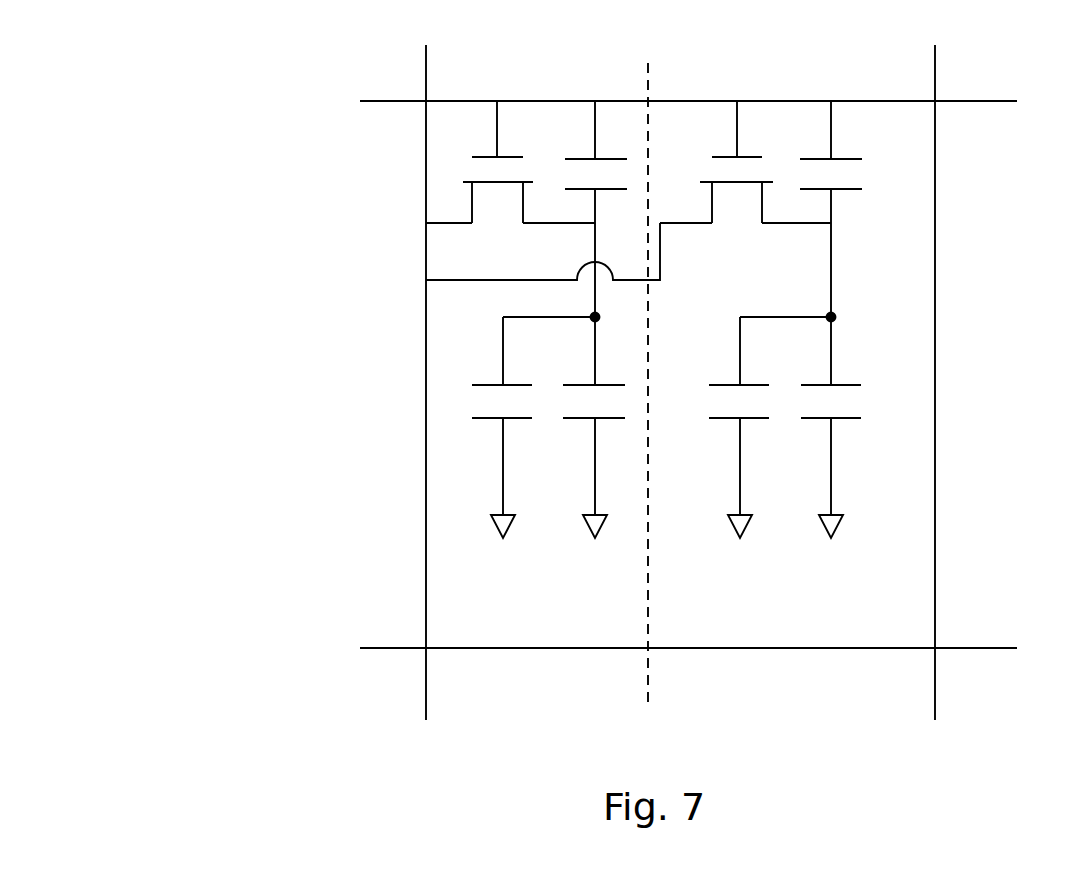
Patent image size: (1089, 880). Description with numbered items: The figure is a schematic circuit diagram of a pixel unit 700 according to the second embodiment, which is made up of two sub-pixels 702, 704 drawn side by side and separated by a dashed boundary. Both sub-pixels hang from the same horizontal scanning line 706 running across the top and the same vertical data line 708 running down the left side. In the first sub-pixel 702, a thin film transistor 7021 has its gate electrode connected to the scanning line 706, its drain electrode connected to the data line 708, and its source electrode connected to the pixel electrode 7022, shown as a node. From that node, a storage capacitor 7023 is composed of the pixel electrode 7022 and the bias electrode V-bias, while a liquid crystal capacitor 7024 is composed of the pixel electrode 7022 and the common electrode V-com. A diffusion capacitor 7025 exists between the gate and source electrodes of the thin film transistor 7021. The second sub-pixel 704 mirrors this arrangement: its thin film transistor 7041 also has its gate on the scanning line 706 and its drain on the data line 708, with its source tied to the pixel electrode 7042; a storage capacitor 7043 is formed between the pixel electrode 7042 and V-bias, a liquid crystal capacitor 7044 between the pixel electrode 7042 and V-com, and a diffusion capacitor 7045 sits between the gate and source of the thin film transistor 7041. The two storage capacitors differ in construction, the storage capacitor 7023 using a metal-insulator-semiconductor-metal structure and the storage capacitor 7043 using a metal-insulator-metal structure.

The pixel unit 700 is at (189, 68).
The sub-pixel 702 is at (543, 113).
The sub-pixel 704 is at (783, 113).
The scanning line 706 is at (973, 101).
The data line 708 is at (426, 447).
The thin film transistor 7021 is at (488, 203).
The pixel electrode 7022 is at (599, 317).
The storage capacitor 7023 is at (563, 403).
The liquid crystal capacitor 7024 is at (470, 403).
The diffusion capacitor 7025 is at (570, 177).
The thin film transistor 7041 is at (712, 167).
The pixel electrode 7042 is at (835, 315).
The storage capacitor 7043 is at (800, 403).
The liquid crystal capacitor 7044 is at (708, 403).
The diffusion capacitor 7045 is at (807, 177).